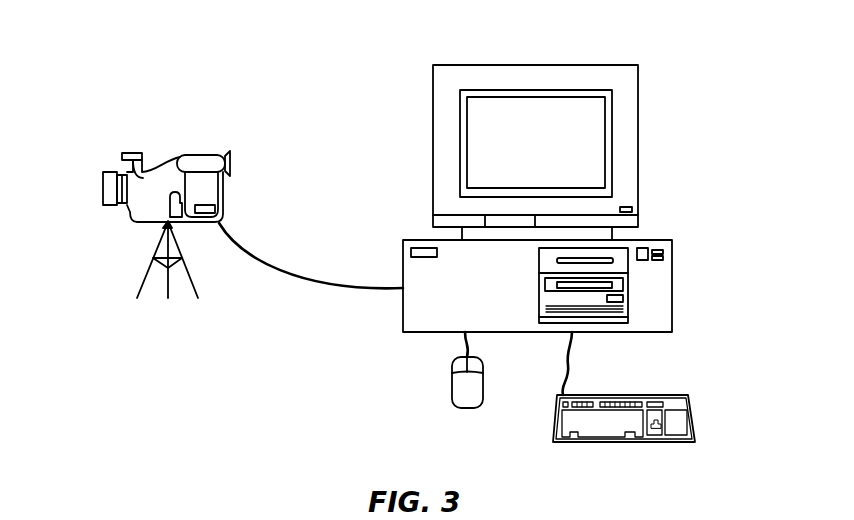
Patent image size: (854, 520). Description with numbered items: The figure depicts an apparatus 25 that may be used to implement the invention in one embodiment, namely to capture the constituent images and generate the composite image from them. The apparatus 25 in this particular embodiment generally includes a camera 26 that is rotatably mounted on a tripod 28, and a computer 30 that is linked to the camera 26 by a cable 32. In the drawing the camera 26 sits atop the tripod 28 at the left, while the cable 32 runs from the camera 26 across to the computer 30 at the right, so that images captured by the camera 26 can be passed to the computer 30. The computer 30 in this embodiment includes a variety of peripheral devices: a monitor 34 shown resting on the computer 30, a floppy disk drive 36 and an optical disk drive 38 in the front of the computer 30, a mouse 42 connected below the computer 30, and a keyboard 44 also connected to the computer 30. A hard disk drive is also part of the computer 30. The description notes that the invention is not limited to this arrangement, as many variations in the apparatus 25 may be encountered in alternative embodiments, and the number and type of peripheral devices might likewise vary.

The apparatus 25 is at (338, 74).
The camera 26 is at (107, 170).
The tripod 28 is at (148, 272).
The computer 30 is at (417, 240).
The cable 32 is at (272, 263).
The monitor 34 is at (583, 130).
The floppy disk drive 36 is at (627, 250).
The optical disk drive 38 is at (628, 275).
The mouse 42 is at (452, 383).
The keyboard 44 is at (692, 413).